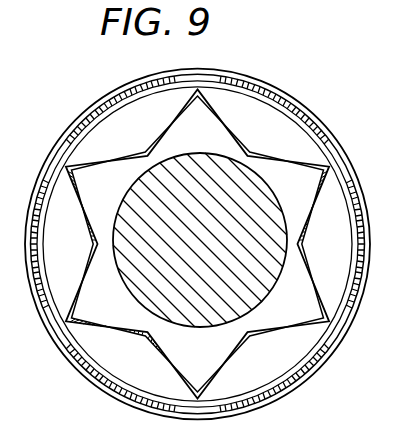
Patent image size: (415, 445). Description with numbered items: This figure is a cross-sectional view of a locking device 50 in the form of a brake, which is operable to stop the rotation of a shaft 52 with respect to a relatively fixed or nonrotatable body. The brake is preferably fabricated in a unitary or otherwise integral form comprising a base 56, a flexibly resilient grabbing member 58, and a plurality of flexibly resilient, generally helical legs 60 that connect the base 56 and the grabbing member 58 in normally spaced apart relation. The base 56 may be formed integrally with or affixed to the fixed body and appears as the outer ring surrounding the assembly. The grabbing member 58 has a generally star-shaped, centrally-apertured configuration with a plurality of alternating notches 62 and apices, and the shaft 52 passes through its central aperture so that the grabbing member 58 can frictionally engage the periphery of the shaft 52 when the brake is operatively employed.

The locking device 50 is at (197, 238).
The shaft 52 is at (212, 183).
The base 56 is at (136, 80).
The grabbing member 58 is at (88, 280).
The helical legs 60 is at (263, 98).
The notches 62 is at (150, 151).